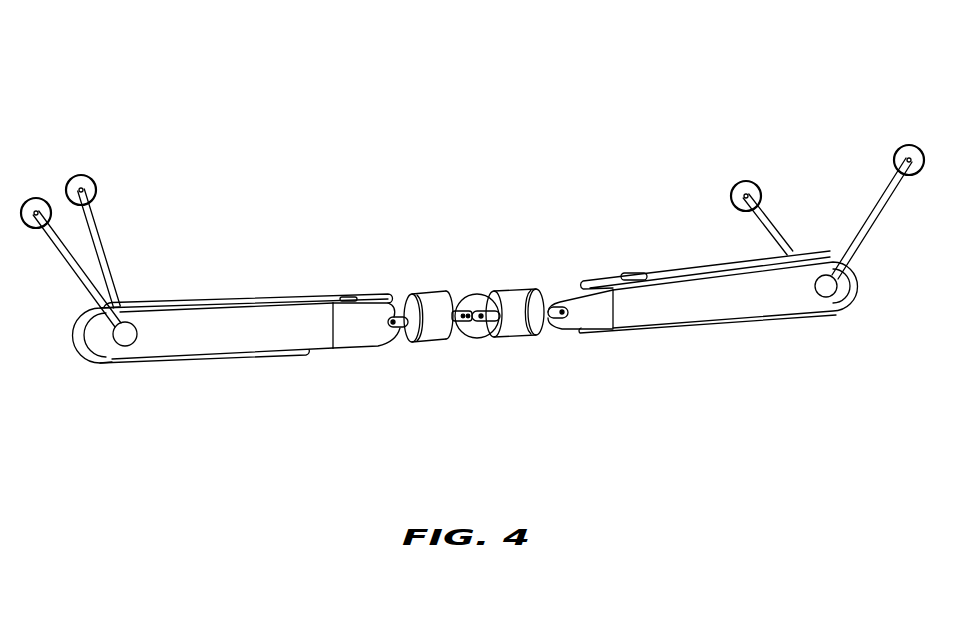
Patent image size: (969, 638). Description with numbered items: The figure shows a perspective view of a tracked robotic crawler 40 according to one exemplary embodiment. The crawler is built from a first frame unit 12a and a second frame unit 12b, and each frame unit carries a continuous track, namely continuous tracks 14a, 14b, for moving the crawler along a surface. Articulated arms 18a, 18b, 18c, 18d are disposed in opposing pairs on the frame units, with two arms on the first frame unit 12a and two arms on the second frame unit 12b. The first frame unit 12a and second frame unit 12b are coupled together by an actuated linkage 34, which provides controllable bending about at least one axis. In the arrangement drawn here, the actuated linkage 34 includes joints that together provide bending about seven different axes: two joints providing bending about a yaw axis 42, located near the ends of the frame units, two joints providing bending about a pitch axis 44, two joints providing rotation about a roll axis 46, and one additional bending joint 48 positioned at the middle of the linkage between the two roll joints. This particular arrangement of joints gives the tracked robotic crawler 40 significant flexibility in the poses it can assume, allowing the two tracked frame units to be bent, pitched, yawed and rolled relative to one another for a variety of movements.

The tracked robotic crawler 40 is at (133, 52).
The actuated linkage 34 is at (587, 175).
The first frame unit 12a is at (233, 343).
The second frame unit 12b is at (737, 299).
The continuous track 14a is at (278, 357).
The continuous track 14b is at (713, 325).
The articulated arm 18a is at (93, 222).
The articulated arm 18b is at (56, 255).
The articulated arm 18c is at (890, 178).
The articulated arm 18d is at (773, 227).
The yaw axis joint 42 is at (338, 294).
The pitch axis joint 44 is at (393, 320).
The roll axis joint 46 is at (415, 292).
The additional bending joint 48 is at (481, 314).